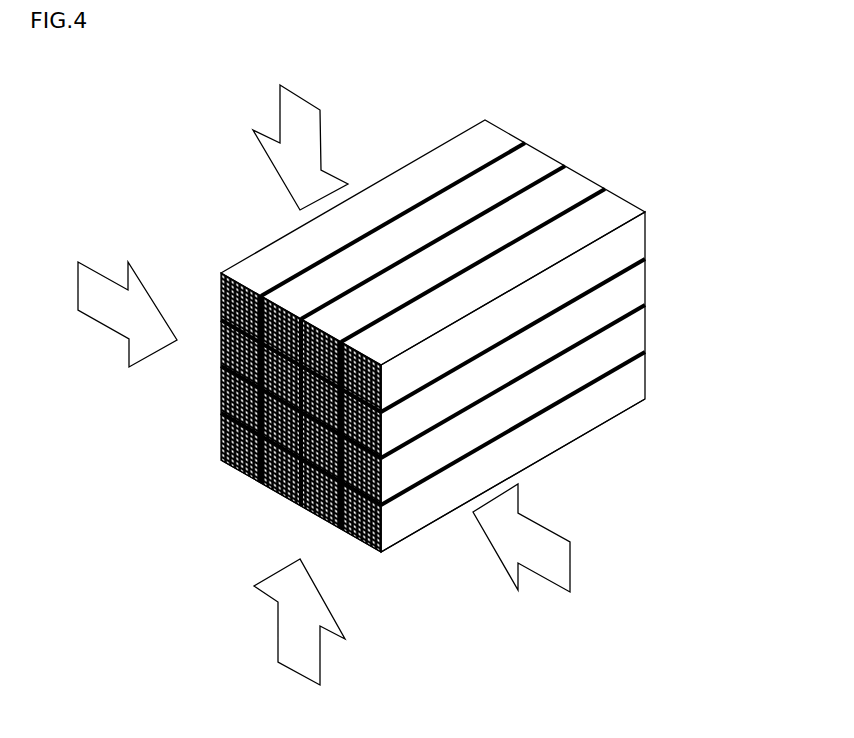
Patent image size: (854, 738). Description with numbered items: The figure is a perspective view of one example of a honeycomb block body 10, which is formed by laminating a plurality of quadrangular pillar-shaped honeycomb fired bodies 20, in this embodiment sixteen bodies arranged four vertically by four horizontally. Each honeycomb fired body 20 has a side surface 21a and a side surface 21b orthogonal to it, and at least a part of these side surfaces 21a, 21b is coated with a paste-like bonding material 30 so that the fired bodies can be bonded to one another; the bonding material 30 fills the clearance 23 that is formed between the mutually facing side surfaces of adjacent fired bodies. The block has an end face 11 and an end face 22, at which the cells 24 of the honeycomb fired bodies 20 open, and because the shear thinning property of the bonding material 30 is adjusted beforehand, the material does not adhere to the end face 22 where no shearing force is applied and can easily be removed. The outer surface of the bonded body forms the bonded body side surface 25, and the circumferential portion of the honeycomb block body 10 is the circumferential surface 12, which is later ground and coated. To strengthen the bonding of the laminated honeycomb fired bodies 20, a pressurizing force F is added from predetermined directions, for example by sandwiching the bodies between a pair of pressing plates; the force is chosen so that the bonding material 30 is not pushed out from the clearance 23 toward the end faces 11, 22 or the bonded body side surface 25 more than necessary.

The honeycomb block body 10 is at (433, 332).
The end face 11 is at (246, 412).
The end face 22 is at (220, 448).
The circumferential surface 12 is at (560, 432).
The honeycomb fired body 20 is at (487, 133).
The side surface 21a is at (548, 308).
The side surface 21b is at (537, 353).
The clearance 23 is at (382, 507).
The cell 24 is at (245, 478).
The bonded body side surface 25 is at (305, 247).
The bonding material 30 is at (607, 193).
The pressurizing force F is at (283, 108).